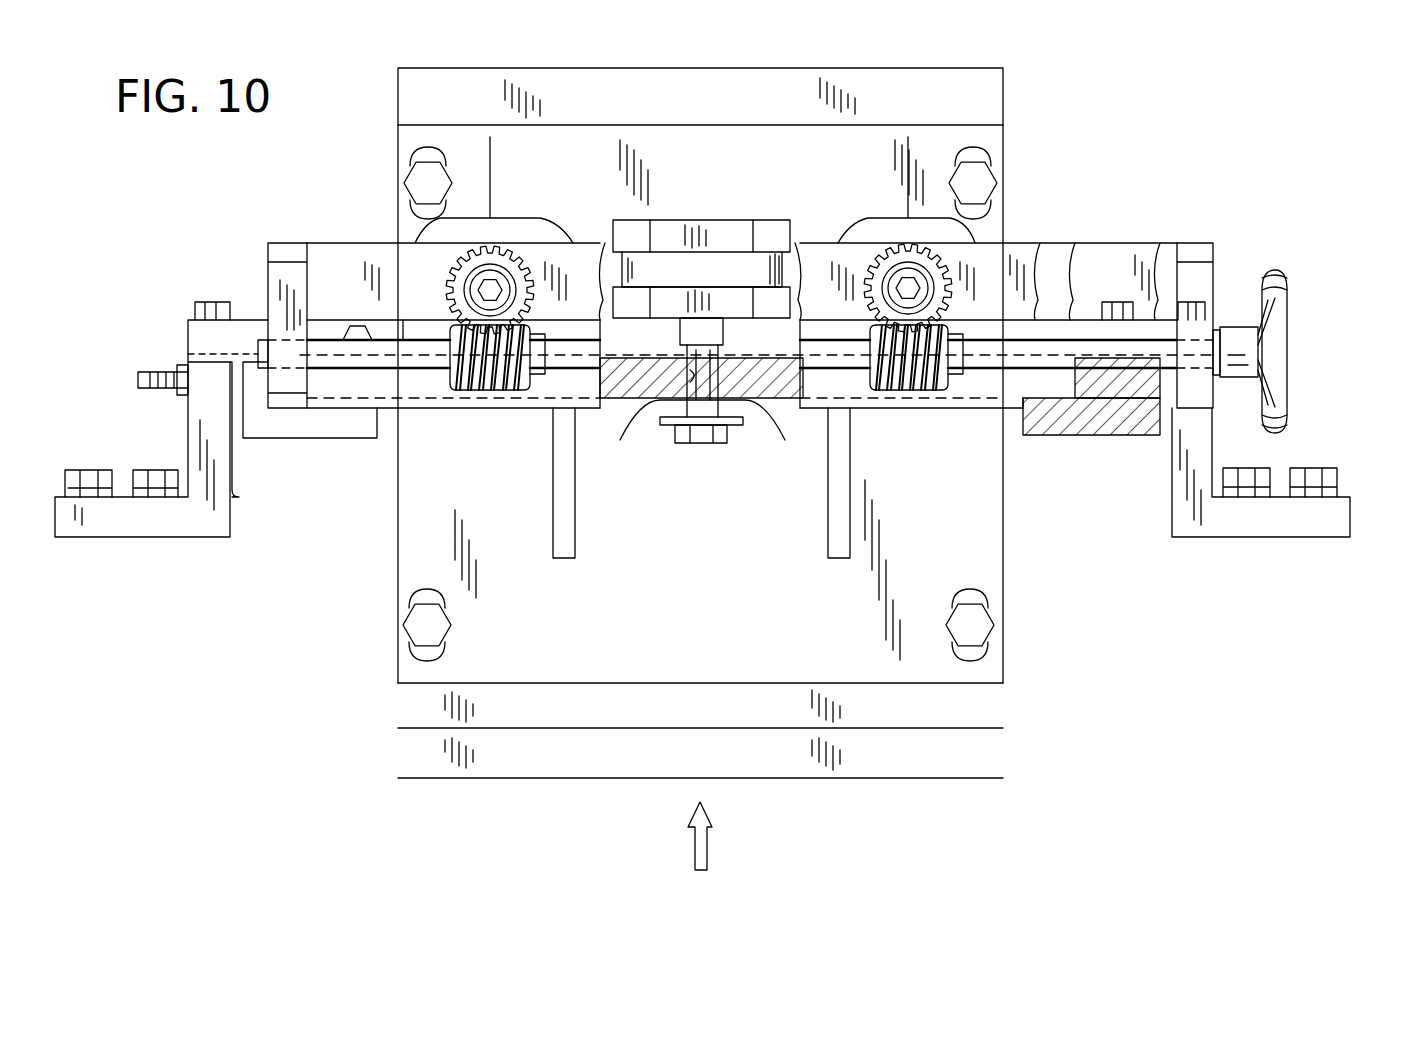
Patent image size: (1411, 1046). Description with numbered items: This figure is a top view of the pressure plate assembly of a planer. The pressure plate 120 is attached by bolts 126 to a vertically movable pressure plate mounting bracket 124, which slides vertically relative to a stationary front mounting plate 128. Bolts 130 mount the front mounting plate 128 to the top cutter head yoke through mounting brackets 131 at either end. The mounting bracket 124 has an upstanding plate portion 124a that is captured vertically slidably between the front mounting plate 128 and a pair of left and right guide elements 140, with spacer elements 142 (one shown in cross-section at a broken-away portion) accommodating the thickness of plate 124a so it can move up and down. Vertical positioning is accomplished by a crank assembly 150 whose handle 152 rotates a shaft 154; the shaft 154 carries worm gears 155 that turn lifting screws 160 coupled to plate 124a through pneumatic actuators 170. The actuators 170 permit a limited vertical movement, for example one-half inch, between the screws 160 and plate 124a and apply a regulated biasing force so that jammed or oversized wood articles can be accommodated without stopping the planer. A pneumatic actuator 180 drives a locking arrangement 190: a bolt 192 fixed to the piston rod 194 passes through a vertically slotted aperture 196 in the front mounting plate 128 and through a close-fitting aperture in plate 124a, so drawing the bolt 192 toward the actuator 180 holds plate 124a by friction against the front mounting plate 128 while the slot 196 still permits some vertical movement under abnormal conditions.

The pressure plate 120 is at (975, 98).
The pressure plate mounting bracket 124 is at (738, 630).
The upstanding plate portion 124a is at (1005, 390).
The bolts 126 is at (420, 185).
The front mounting plate 128 is at (1080, 335).
The bolts 130 is at (212, 302).
The mounting brackets 131 is at (195, 520).
The guide elements 140 is at (290, 420).
The spacer elements 142 is at (1062, 398).
The crank assembly 150 is at (1304, 268).
The handle 152 is at (1252, 388).
The shaft 154 is at (410, 370).
The worm gears 155 is at (497, 392).
The lifting screws 160 is at (490, 290).
The pneumatic actuators 170 is at (520, 228).
The pneumatic actuator 180 is at (708, 220).
The locking arrangement 190 is at (686, 466).
The bolt 192 is at (710, 445).
The piston rod 194 is at (740, 422).
The vertically slotted aperture 196 is at (648, 410).